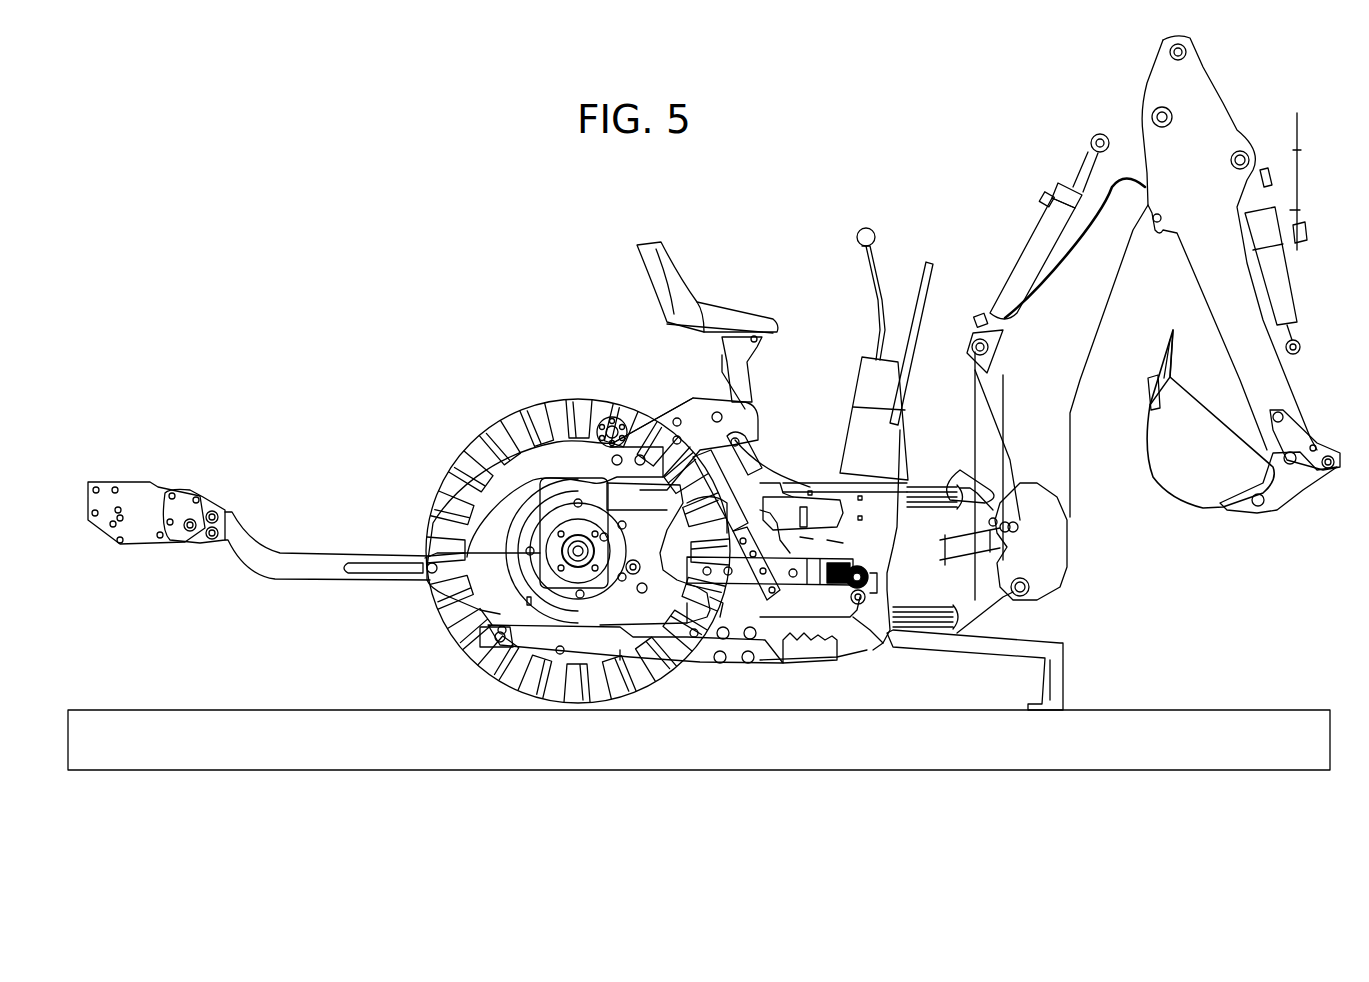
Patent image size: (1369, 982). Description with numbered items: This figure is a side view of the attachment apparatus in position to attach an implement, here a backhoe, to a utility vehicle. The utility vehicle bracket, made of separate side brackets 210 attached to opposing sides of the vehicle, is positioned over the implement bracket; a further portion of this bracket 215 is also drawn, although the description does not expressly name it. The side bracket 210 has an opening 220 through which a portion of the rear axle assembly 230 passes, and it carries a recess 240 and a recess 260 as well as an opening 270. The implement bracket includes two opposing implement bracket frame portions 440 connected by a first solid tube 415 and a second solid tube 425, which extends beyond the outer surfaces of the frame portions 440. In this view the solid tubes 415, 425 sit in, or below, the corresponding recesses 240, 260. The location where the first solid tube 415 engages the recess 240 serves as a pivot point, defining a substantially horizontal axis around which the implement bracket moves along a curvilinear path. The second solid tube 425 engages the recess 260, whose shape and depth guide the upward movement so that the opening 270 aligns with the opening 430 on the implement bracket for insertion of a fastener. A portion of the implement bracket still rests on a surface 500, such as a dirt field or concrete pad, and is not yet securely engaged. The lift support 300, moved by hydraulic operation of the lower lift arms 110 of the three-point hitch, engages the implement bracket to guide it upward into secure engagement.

The lower lift arm 110 is at (817, 585).
The side bracket 210 is at (513, 683).
The front axle arm 215 is at (445, 545).
The opening 220 is at (467, 545).
The rear axle assembly 230 is at (567, 507).
The recess 240 is at (560, 606).
The recess 260 is at (762, 660).
The opening 270 is at (717, 413).
The lift support 300 is at (862, 612).
The first solid tube 415 is at (500, 642).
The second solid tube 425 is at (695, 640).
The opening 430 is at (765, 447).
The implement bracket frame portion 440 is at (618, 652).
The surface 500 is at (1210, 723).